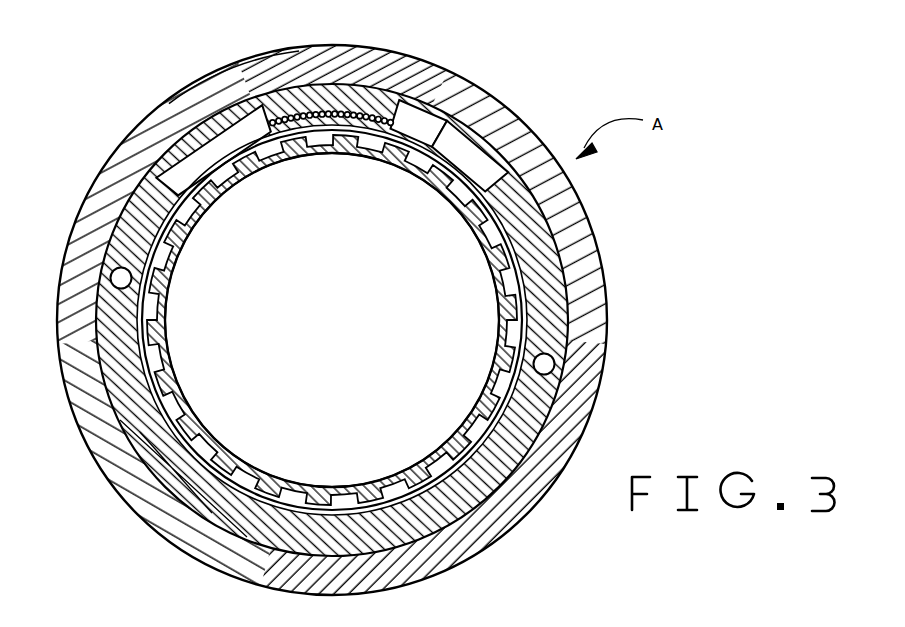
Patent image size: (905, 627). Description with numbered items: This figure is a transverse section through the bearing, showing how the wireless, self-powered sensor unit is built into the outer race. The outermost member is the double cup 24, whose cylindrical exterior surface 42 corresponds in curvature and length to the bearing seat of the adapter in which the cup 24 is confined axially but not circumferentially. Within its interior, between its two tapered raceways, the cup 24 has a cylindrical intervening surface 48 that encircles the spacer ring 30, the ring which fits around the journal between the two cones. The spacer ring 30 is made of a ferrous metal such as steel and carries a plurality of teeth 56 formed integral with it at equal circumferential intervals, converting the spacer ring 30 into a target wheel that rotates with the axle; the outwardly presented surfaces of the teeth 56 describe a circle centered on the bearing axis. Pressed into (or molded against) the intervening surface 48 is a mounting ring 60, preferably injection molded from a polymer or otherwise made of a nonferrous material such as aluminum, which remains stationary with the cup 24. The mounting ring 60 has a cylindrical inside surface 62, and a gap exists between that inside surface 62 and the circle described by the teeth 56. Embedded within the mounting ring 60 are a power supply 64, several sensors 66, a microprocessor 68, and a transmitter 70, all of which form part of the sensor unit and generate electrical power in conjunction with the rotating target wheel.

The double cup 24 is at (572, 230).
The spacer ring 30 is at (207, 425).
The cylindrical exterior surface 42 is at (105, 178).
The cylindrical intervening surface 48 is at (120, 422).
The teeth 56 is at (520, 333).
The mounting ring 60 is at (433, 513).
The inside surface 62 is at (512, 343).
The power supply 64 is at (207, 147).
The sensors 66 is at (113, 270).
The microprocessor 68 is at (418, 118).
The transmitter 70 is at (473, 157).